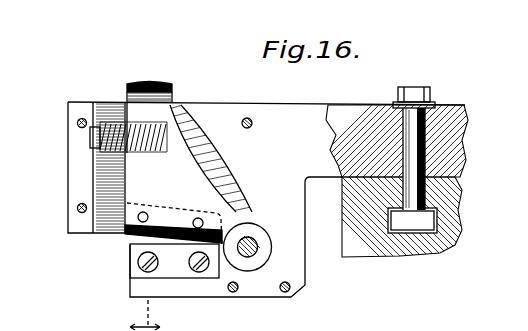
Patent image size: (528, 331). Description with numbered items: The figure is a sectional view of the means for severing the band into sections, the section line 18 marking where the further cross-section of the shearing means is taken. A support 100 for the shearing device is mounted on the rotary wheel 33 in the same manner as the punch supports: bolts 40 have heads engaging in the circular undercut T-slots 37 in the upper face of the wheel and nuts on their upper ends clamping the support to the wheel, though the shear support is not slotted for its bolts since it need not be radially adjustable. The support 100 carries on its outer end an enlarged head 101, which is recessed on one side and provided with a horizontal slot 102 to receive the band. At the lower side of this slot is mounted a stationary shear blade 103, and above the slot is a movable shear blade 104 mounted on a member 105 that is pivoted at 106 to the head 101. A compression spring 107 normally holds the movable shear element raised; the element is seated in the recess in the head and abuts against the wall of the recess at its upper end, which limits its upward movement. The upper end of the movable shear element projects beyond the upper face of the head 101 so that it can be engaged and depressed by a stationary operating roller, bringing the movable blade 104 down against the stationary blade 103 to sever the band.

The section line 18 is at (148, 100).
The rotary wheel 33 is at (373, 253).
The T-slot 37 is at (443, 222).
The bolt 40 is at (437, 112).
The support 100 is at (462, 117).
The head 101 is at (297, 268).
The horizontal slot 102 is at (132, 242).
The stationary shear blade 103 is at (132, 268).
The movable shear blade 104 is at (110, 241).
The member 105 is at (193, 187).
The pivot 106 is at (252, 247).
The compression spring 107 is at (114, 133).